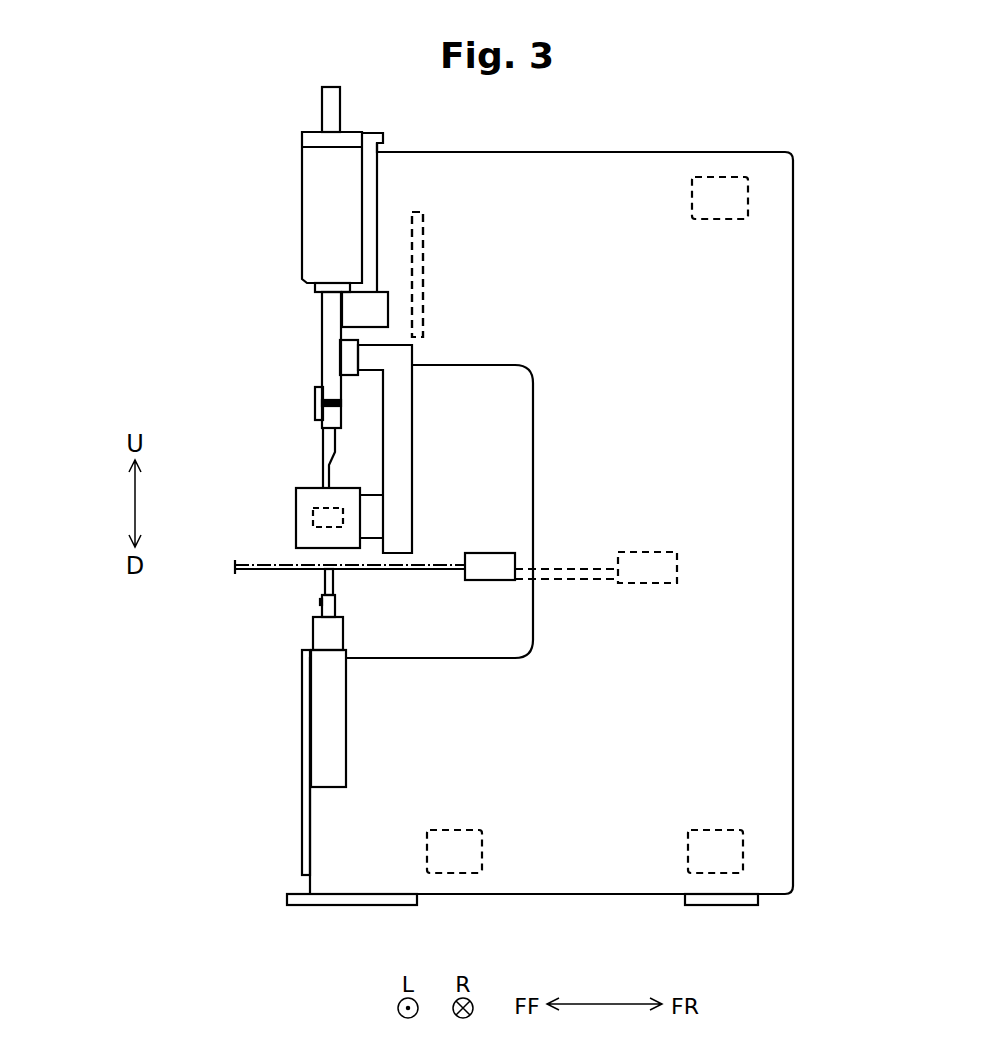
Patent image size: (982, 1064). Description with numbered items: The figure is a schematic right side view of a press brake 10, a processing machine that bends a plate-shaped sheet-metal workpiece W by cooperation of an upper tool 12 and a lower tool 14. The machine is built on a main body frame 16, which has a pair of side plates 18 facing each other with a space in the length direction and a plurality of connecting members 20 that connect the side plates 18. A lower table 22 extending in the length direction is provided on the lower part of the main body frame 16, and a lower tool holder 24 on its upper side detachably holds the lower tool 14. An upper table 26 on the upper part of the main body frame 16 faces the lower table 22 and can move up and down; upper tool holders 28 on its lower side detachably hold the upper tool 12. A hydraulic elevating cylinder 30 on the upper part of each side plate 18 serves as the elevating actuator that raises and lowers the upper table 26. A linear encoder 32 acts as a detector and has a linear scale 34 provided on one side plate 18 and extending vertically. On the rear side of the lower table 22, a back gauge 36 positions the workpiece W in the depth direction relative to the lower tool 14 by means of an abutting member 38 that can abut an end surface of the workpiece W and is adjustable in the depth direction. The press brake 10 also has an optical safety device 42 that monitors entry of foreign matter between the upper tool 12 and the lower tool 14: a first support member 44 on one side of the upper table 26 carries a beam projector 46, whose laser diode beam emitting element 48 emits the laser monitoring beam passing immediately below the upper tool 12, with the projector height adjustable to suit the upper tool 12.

The press brake 10 is at (185, 260).
The upper tool 12 is at (323, 470).
The lower tool 14 is at (325, 585).
The main body frame 16 is at (808, 543).
The side plate 18 is at (793, 432).
The connecting member 20 is at (710, 177).
The lower table 22 is at (312, 736).
The lower tool holder 24 is at (322, 606).
The upper table 26 is at (322, 367).
The upper tool holder 28 is at (315, 398).
The hydraulic elevating cylinder 30 is at (301, 195).
The linear encoder 32 is at (441, 259).
The linear scale 34 is at (424, 304).
The back gauge 36 is at (651, 548).
The abutting member 38 is at (485, 581).
The optical safety device 42 is at (433, 459).
The first support member 44 is at (412, 493).
The beam projector 46 is at (296, 493).
The beam emitting element 48 is at (313, 518).
The workpiece W is at (348, 570).